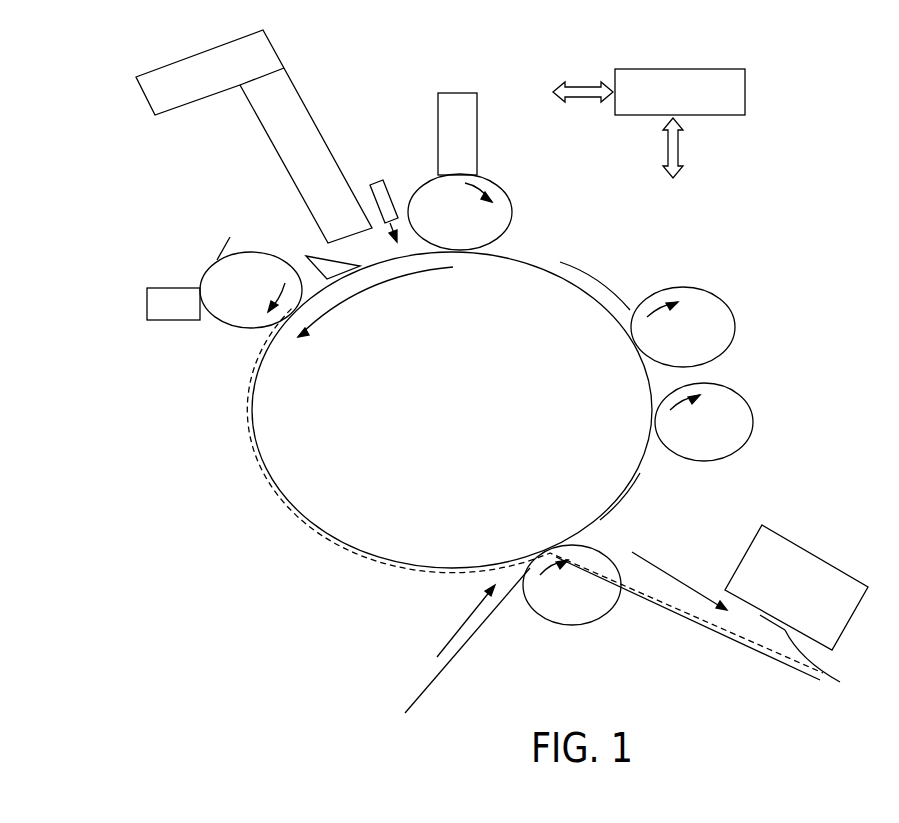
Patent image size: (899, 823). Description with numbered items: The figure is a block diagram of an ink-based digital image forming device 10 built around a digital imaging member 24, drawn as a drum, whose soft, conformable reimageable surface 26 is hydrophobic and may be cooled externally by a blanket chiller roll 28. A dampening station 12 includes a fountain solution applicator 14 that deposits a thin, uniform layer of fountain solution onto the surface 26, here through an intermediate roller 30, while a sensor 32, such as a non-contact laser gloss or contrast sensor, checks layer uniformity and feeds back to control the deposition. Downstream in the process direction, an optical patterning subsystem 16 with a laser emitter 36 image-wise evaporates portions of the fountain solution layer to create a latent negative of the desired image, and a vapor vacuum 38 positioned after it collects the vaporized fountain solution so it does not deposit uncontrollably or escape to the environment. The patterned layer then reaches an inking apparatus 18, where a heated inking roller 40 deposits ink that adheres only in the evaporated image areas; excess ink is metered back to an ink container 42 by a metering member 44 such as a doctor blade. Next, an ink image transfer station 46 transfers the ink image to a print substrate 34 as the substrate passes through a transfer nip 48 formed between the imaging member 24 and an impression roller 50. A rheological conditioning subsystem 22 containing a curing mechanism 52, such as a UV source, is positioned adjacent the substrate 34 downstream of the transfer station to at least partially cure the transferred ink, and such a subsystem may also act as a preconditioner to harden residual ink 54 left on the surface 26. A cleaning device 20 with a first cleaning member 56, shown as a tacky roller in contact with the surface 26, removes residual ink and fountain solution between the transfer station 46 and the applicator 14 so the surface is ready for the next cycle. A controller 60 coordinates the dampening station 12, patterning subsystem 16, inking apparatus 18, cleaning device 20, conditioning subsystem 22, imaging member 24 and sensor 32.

The image forming device 10 is at (788, 142).
The dampening station 12 is at (515, 197).
The fountain solution applicator 14 is at (470, 95).
The optical patterning subsystem 16 is at (320, 55).
The inking apparatus 18 is at (117, 268).
The cleaning device 20 is at (788, 397).
The rheological conditioning subsystem 22 is at (807, 547).
The digital imaging member 24 is at (442, 424).
The reimageable surface 26 is at (590, 293).
The blanket chiller roll 28 is at (735, 328).
The roller 30 is at (432, 181).
The sensor 32 is at (383, 183).
The print substrate 34 is at (430, 683).
The laser emitter 36 is at (313, 113).
The vapor vacuum 38 is at (306, 256).
The inking roller 40 is at (238, 328).
The ink container 42 is at (145, 298).
The metering member 44 is at (220, 255).
The ink image transfer station 46 is at (460, 583).
The transfer nip 48 is at (620, 535).
The impression roller 50 is at (573, 625).
The curing mechanism 52 is at (817, 672).
The residual ink 54 is at (640, 473).
The first cleaning member 56 is at (753, 420).
The controller 60 is at (664, 101).